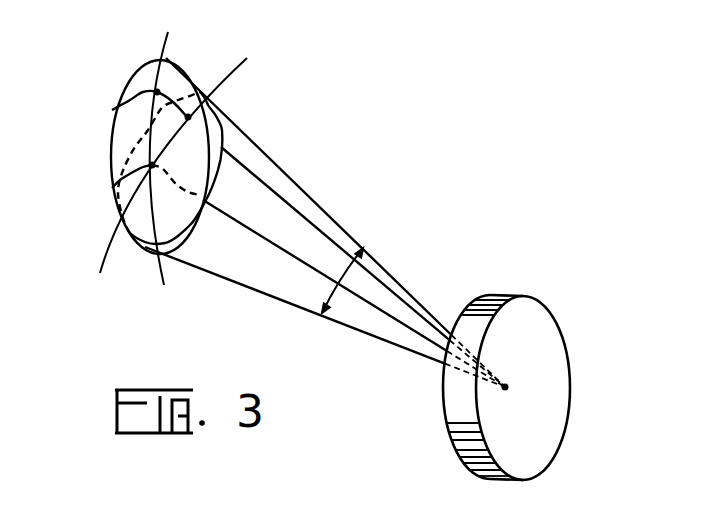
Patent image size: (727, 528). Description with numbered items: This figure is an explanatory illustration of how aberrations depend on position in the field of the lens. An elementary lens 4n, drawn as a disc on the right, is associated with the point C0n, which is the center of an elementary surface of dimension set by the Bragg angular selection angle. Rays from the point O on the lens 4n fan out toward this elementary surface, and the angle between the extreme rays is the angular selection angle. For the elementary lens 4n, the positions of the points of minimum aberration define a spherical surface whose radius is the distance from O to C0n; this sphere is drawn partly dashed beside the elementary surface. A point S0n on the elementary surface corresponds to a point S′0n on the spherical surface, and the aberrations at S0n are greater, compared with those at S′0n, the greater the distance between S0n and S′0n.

The elementary lens 4n is at (533, 310).
The center of the spherical surface O is at (515, 376).
The point on the elementary surface S0n is at (112, 110).
The corresponding point on the spherical surface S′0n is at (188, 117).
The center point of the elementary surface C0n is at (112, 188).